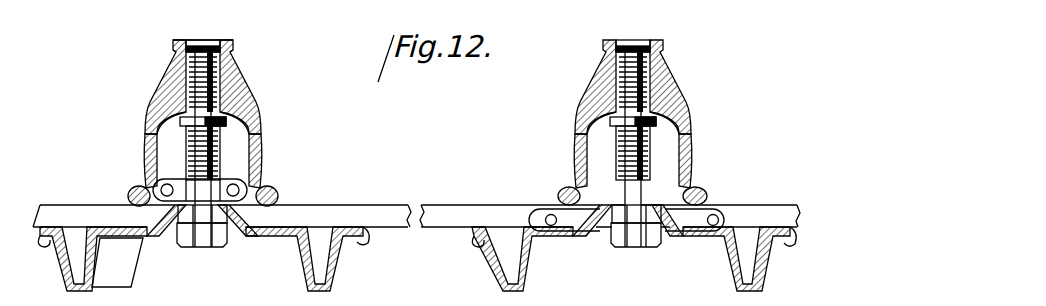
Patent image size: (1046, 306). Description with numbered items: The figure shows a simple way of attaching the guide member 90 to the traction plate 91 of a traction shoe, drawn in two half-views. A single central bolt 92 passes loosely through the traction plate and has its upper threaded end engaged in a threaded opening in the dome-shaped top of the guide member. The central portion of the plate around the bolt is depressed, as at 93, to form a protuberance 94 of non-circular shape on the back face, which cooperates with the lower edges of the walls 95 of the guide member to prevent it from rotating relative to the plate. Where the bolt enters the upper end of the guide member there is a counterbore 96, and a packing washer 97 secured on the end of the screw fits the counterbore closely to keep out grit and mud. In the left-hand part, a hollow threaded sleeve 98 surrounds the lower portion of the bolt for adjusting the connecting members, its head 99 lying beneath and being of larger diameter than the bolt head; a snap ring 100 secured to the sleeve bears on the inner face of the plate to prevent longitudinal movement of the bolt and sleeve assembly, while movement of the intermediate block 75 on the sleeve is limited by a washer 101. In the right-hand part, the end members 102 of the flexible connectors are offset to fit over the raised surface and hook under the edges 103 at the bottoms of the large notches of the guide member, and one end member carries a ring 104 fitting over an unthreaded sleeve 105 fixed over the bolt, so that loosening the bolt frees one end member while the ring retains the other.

The intermediate block 75 is at (172, 180).
The guide member 90 is at (230, 97).
The traction plate 91 is at (268, 236).
The central bolt 92 is at (177, 90).
The depressed central portion 93 is at (160, 238).
The protuberance 94 is at (248, 212).
The walls of the guide member 95 is at (258, 150).
The counterbore 96 is at (231, 58).
The packing washer 97 is at (203, 41).
The hollow threaded sleeve 98 is at (216, 149).
The sleeve head 99 is at (229, 247).
The snap ring 100 is at (264, 188).
The washer 101 is at (178, 119).
The end members 102 is at (583, 220).
The edges 103 is at (558, 194).
The ring 104 is at (652, 205).
The unthreaded sleeve 105 is at (648, 138).